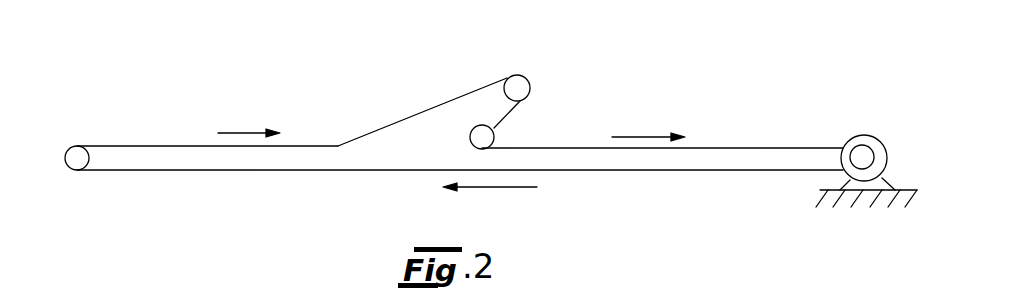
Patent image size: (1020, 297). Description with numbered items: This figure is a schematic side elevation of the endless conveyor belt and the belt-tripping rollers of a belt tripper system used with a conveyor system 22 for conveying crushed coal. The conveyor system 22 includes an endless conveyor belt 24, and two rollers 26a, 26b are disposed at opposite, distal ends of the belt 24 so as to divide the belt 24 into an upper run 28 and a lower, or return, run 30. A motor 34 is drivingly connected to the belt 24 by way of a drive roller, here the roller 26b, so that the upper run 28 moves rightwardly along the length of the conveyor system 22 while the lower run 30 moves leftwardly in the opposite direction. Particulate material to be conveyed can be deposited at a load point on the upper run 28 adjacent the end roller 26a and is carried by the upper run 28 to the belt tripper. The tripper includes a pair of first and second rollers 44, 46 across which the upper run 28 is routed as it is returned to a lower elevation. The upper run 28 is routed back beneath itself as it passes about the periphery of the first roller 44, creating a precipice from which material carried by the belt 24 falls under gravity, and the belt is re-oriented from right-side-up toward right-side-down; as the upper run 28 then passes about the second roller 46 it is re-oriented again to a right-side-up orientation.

The conveyor system 22 is at (170, 145).
The endless conveyor belt 24 is at (782, 147).
The roller 26a is at (71, 147).
The roller 26b is at (862, 157).
The upper run 28 is at (204, 145).
The lower run 30 is at (609, 172).
The motor 34 is at (883, 148).
The first roller 44 is at (519, 83).
The second roller 46 is at (489, 133).